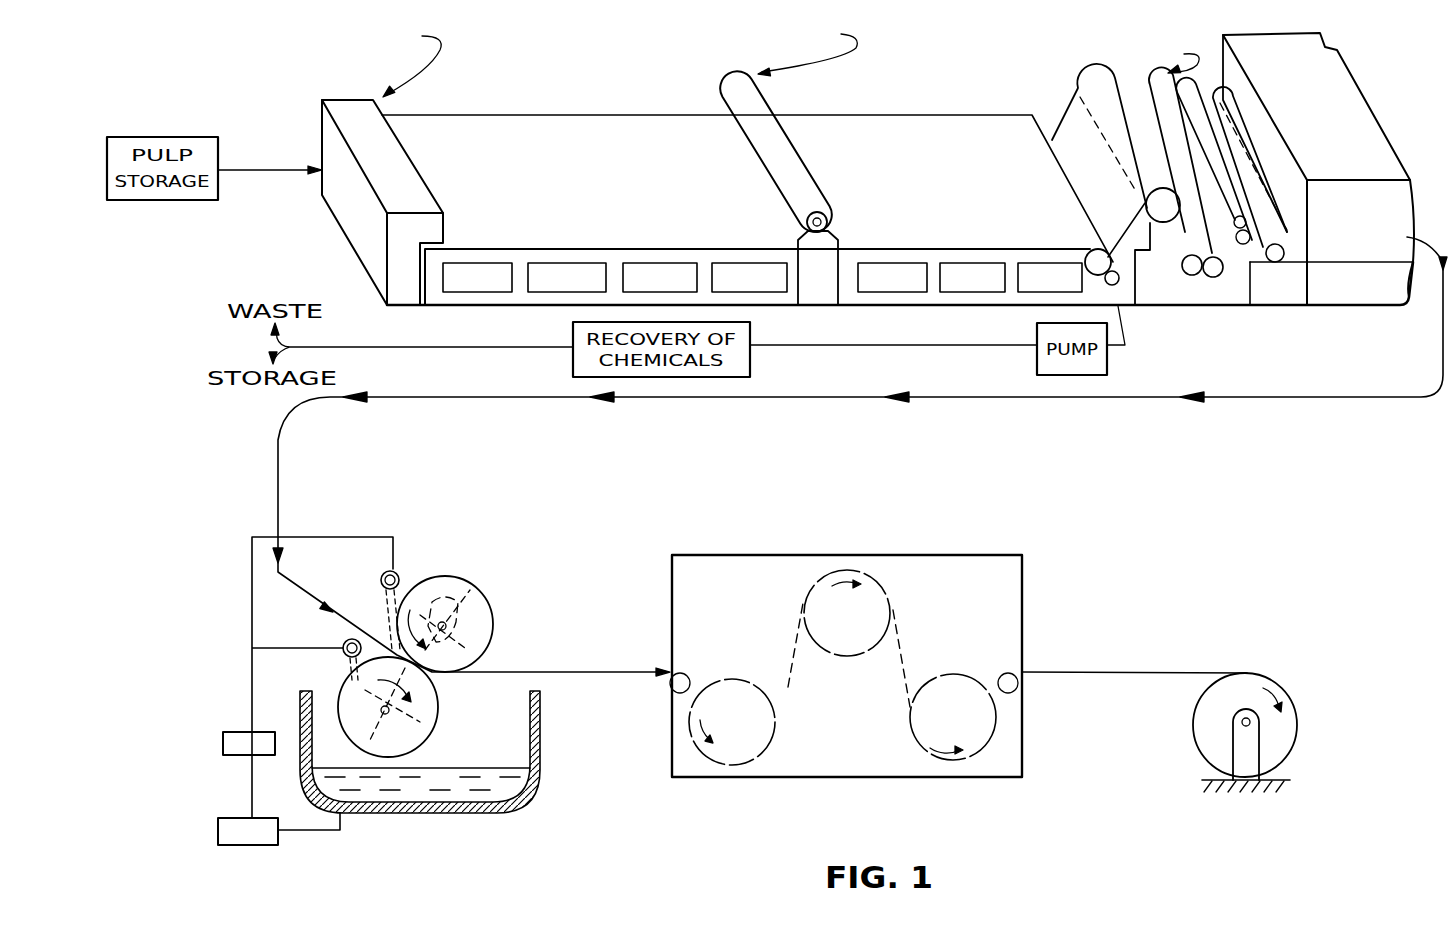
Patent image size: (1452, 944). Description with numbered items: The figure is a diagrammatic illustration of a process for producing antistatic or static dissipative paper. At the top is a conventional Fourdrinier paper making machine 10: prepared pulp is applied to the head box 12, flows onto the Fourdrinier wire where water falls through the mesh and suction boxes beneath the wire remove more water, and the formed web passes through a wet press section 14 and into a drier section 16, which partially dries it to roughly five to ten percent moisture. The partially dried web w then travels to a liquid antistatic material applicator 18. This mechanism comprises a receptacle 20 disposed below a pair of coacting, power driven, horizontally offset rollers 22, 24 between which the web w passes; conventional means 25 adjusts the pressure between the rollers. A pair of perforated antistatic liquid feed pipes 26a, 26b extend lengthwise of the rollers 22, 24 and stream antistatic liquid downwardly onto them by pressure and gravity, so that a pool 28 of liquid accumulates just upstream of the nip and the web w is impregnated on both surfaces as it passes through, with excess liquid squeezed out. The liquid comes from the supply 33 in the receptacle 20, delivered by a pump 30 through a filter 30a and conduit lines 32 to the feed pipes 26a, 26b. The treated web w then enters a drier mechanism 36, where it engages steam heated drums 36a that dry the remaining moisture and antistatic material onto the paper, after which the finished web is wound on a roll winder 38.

The paper making machine 10 is at (557, 103).
The head box 12 is at (343, 103).
The wet press section 14 is at (1251, 306).
The drier section 16 is at (1328, 56).
The liquid antistatic material applicator 18 is at (503, 578).
The receptacle 20 is at (466, 789).
The power driven roller 22 is at (453, 583).
The power driven roller 24 is at (424, 727).
The pressure adjusting means 25 is at (470, 640).
The perforated antistatic liquid feed pipe 26a is at (395, 570).
The perforated antistatic liquid feed pipe 26b is at (345, 642).
The pool of antistatic liquid 28 is at (397, 650).
The pump 30 is at (243, 845).
The filter 30a is at (222, 743).
The conduit lines 32 is at (250, 593).
The supply of antistatic liquid 33 is at (514, 803).
The drier mechanism 36 is at (958, 673).
The heated drums 36a is at (887, 607).
The roll winder 38 is at (1270, 675).
The web W is at (1265, 397).